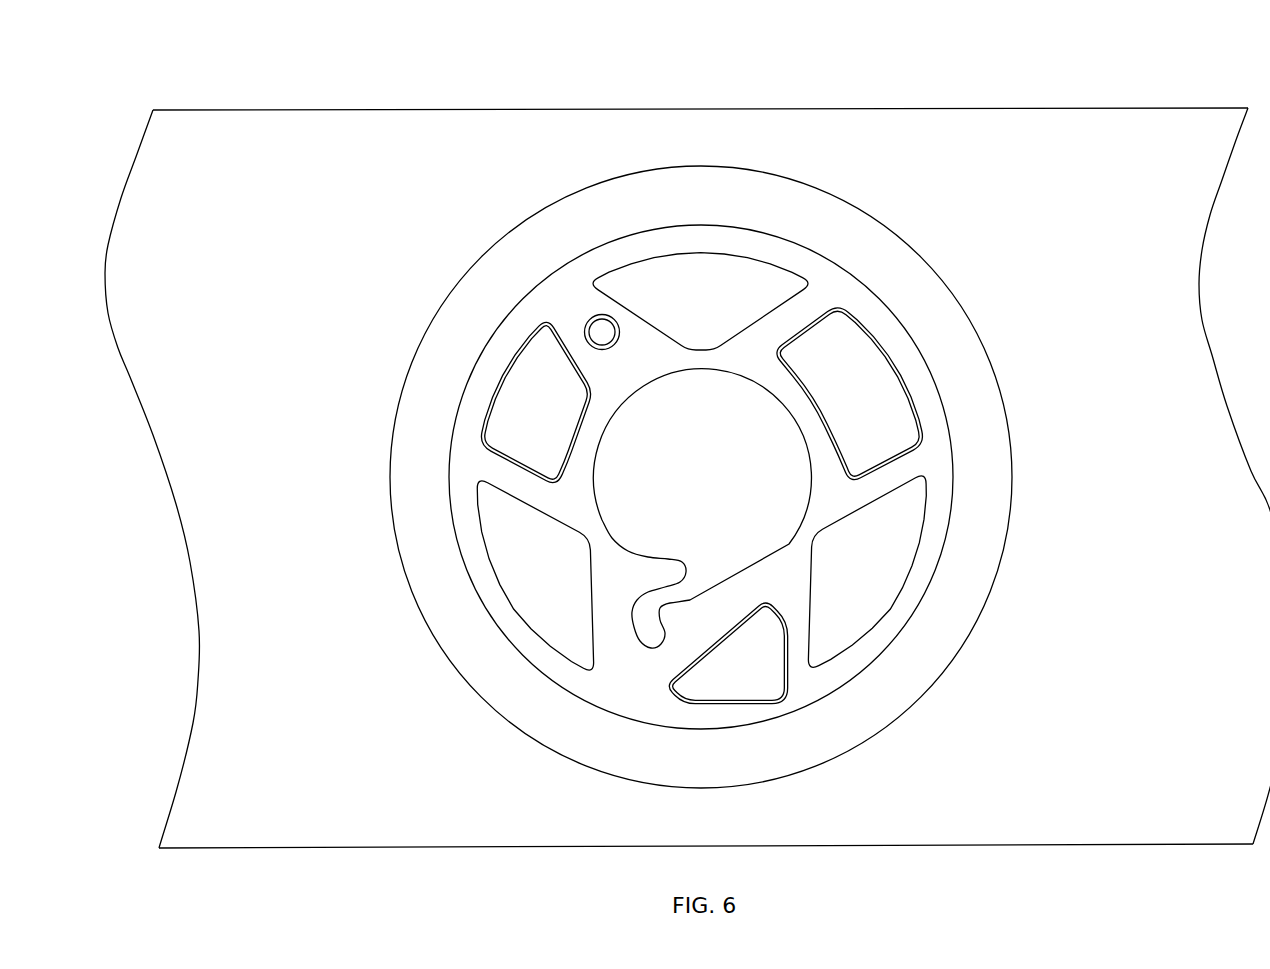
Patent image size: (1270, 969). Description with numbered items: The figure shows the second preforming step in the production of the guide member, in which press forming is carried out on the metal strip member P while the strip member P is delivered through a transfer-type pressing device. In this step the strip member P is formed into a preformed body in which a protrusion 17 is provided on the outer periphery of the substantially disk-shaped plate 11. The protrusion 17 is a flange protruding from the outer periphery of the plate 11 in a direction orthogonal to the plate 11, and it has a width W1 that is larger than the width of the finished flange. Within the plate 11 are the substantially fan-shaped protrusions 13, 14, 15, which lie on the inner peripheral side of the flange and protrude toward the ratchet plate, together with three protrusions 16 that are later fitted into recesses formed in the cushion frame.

The strip member P is at (1185, 132).
The plate 11 is at (828, 297).
The protrusion 13 is at (720, 277).
The protrusion 14 is at (868, 573).
The protrusion 15 is at (543, 592).
The protrusion 16 is at (890, 408).
The protrusion 17 is at (986, 343).
The width W1 is at (908, 523).